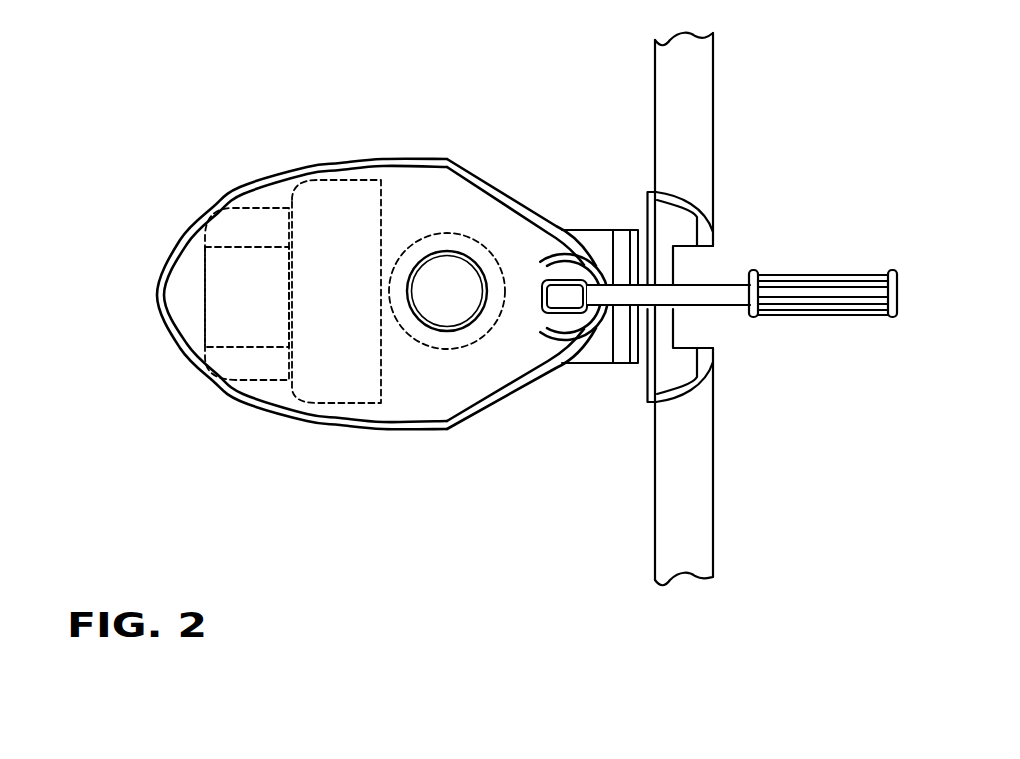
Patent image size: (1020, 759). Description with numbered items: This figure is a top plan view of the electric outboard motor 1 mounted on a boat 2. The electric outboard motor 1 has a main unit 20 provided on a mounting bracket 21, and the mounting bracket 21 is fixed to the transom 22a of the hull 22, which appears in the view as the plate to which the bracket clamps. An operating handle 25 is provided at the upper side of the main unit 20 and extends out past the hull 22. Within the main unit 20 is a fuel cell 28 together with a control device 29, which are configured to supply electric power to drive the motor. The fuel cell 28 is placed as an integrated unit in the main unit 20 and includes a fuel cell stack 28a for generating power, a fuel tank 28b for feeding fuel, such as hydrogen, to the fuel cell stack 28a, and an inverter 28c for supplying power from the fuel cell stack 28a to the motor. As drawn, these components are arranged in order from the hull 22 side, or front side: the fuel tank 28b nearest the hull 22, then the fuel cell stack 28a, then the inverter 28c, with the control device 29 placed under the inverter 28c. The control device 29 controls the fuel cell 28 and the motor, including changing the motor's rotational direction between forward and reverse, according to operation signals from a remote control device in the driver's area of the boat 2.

The electric outboard motor 1 is at (555, 33).
The boat 2 is at (780, 305).
The main unit 20 is at (313, 438).
The mounting bracket 21 is at (636, 356).
The hull 22 is at (727, 305).
The transom 22a is at (698, 107).
The operating handle 25 is at (731, 304).
The fuel cell 28 is at (344, 294).
The fuel cell stack 28a is at (332, 213).
The fuel tank 28b is at (453, 318).
The inverter 28c is at (270, 217).
The control device 29 is at (222, 258).